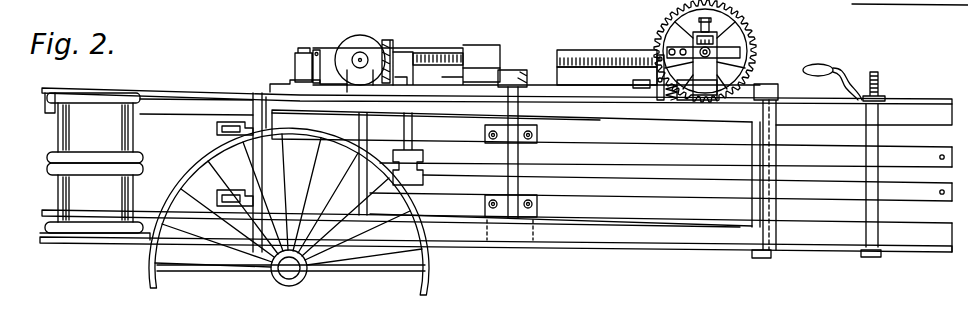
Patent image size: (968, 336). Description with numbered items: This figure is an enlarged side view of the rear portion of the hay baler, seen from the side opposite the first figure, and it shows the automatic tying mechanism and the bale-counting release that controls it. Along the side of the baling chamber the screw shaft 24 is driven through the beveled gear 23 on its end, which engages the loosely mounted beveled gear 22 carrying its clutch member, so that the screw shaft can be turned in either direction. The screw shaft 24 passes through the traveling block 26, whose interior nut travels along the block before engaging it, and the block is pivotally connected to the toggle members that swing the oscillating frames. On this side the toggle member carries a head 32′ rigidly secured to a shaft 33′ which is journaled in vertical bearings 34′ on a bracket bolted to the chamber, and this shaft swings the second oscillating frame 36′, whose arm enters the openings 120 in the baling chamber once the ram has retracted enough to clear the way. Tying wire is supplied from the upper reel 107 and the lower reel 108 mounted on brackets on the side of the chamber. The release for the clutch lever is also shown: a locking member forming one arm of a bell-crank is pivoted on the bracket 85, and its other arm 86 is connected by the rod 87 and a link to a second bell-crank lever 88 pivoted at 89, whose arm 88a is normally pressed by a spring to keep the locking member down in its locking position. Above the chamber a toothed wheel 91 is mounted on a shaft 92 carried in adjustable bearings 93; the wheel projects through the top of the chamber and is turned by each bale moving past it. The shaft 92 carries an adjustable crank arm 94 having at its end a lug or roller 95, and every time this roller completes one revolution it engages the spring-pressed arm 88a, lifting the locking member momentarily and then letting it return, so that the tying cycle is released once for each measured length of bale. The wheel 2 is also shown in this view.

The wheel 2 is at (438, 262).
The beveled gear 22 is at (365, 40).
The beveled gear 23 is at (388, 43).
The screw shaft 24 is at (447, 57).
The traveling block 26 is at (483, 65).
The head 32′ is at (514, 80).
The shaft 33′ is at (517, 105).
The vertical bearings 34′ is at (518, 142).
The oscillating frame 36′ is at (464, 108).
The bracket 85 is at (280, 84).
The arm 86 is at (319, 50).
The rod 87 is at (550, 50).
The bell-crank lever 88 is at (655, 68).
The arm 88a is at (683, 96).
The pivot 89 is at (658, 90).
The toothed wheel 91 is at (749, 33).
The shaft 92 is at (713, 53).
The adjustable bearings 93 is at (727, 38).
The adjustable crank arm 94 is at (680, 32).
The lug or roller 95 is at (677, 47).
The upper reel 107 is at (72, 125).
The lower reel 108 is at (70, 178).
The openings 120 is at (230, 192).